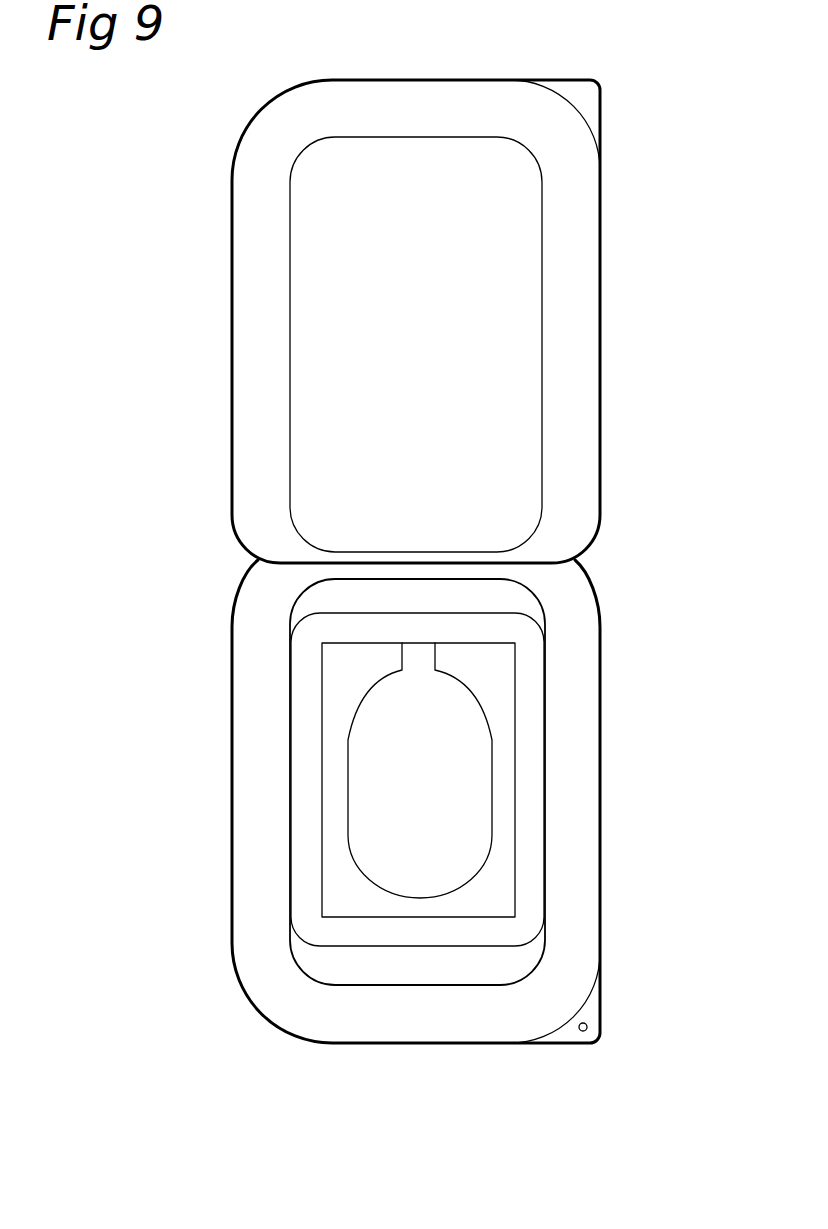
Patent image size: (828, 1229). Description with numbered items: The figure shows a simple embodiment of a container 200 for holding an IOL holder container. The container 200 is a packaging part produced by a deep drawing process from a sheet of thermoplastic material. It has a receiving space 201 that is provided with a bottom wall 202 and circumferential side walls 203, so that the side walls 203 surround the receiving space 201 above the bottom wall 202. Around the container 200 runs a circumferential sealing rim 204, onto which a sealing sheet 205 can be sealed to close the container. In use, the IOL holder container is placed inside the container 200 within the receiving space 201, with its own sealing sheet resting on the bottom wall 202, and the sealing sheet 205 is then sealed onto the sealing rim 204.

The container 200 is at (600, 855).
The receiving space 201 is at (493, 680).
The bottom wall 202 is at (502, 730).
The circumferential side walls 203 is at (305, 830).
The circumferential sealing rim 204 is at (573, 758).
The sealing sheet 205 is at (577, 448).